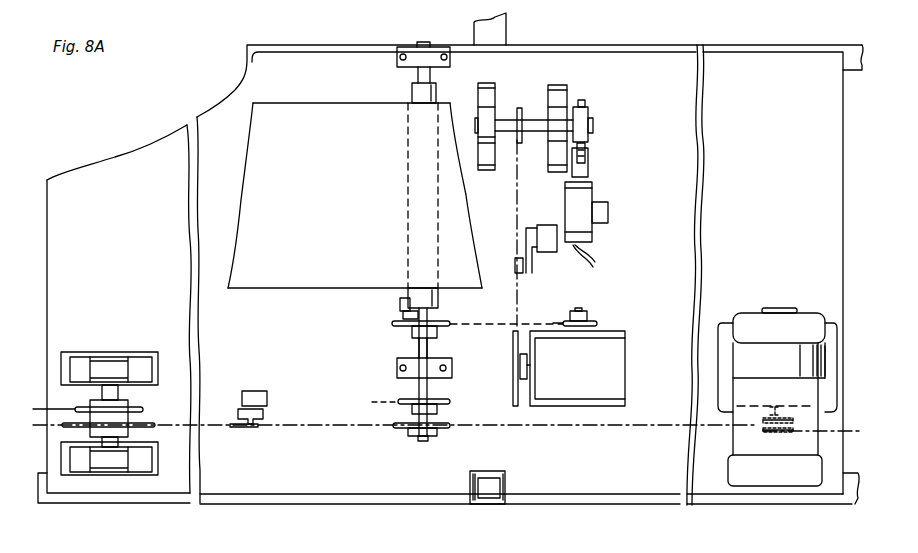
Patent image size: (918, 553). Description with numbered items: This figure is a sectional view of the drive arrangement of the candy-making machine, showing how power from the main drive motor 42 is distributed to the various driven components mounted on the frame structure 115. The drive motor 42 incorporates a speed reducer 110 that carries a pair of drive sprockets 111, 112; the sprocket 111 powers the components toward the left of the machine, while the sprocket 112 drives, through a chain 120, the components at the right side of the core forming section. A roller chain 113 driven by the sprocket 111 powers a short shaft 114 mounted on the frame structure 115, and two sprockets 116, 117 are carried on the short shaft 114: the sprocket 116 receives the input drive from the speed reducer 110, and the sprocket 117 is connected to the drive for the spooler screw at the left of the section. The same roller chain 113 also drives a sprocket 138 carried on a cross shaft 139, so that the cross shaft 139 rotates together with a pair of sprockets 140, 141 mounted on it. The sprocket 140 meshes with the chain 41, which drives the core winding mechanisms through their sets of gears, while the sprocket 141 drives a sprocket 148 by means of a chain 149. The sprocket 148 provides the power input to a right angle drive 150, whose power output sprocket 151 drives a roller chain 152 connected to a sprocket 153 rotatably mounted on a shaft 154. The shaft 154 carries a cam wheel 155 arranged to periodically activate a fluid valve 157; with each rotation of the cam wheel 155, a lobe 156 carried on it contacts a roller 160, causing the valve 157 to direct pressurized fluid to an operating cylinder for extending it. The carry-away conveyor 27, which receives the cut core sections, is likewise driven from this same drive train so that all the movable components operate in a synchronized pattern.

The carry-away conveyor 27 is at (290, 283).
The chain 41 is at (382, 398).
The main drive motor 42 is at (768, 473).
The speed reducer 110 is at (730, 344).
The drive sprocket 111 is at (768, 415).
The drive sprocket 112 is at (763, 429).
The roller chain 113 is at (580, 428).
The short shaft 114 is at (115, 385).
The frame structure 115 is at (173, 501).
The sprocket 116 is at (150, 426).
The sprocket 117 is at (143, 409).
The chain 120 is at (835, 432).
The sprocket 138 is at (395, 426).
The cross shaft 139 is at (428, 350).
The sprocket 140 is at (452, 401).
The sprocket 141 is at (443, 323).
The sprocket 148 is at (593, 323).
The chain 149 is at (553, 323).
The right angle drive 150 is at (618, 373).
The power output sprocket 151 is at (515, 408).
The roller chain 152 is at (515, 213).
The sprocket 153 is at (518, 107).
The shaft 154 is at (537, 115).
The cam wheel 155 is at (583, 118).
The lobe 156 is at (585, 100).
The fluid valve 157 is at (582, 200).
The roller 160 is at (585, 150).